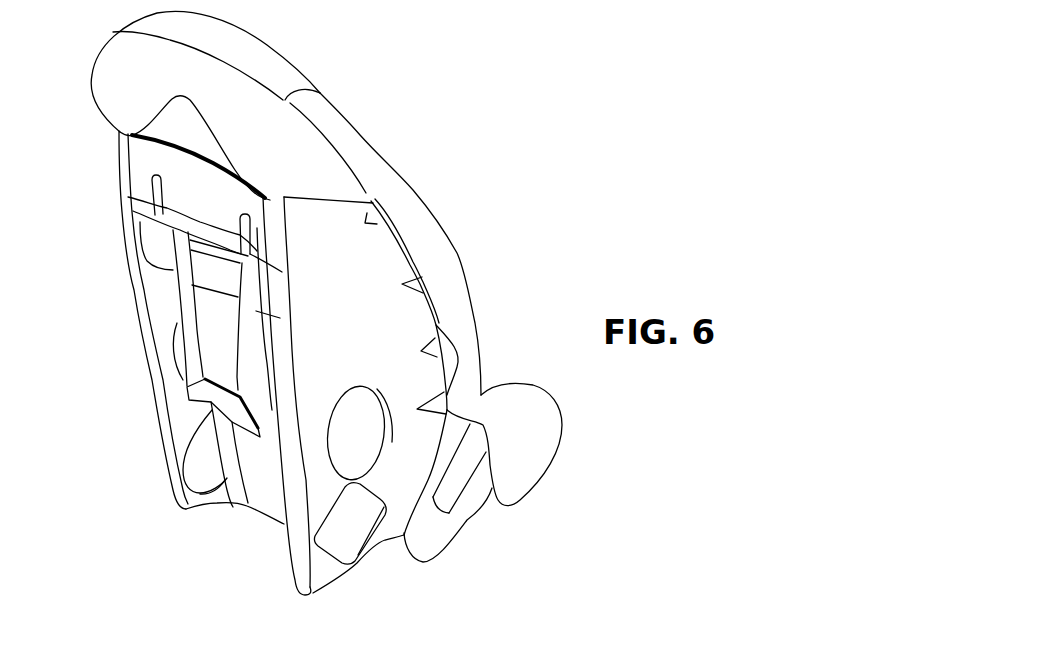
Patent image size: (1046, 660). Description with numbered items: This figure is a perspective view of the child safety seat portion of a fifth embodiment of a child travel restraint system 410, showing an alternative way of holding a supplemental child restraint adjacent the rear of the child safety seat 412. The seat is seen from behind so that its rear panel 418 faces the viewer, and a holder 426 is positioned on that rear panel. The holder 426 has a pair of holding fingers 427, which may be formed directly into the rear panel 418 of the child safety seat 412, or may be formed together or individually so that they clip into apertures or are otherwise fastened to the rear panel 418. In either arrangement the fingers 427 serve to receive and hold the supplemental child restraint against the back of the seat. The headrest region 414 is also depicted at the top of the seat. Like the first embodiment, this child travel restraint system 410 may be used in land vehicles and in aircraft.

The child travel restraint system 410 is at (127, 525).
The child safety seat 412 is at (203, 503).
The headrest 414 is at (140, 157).
The rear panel 418 is at (217, 344).
The holder 426 is at (147, 220).
The holding fingers 427 is at (164, 215).